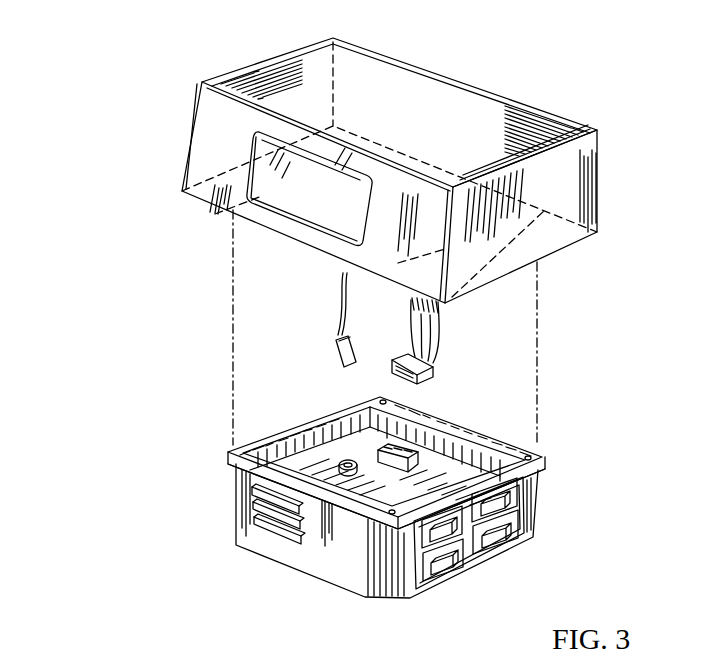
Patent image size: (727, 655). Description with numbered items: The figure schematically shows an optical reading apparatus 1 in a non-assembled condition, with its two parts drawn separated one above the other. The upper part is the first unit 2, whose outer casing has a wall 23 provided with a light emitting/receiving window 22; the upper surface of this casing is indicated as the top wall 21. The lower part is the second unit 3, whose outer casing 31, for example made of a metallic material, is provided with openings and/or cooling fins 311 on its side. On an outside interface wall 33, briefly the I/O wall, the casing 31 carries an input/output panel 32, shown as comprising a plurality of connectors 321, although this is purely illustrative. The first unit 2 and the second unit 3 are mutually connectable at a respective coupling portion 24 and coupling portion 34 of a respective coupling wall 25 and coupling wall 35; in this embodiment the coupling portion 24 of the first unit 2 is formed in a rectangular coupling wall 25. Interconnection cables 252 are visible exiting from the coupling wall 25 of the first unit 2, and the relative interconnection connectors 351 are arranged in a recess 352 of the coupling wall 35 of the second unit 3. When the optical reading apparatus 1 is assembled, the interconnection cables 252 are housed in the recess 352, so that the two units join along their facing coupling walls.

The optical reading apparatus 1 is at (196, 330).
The first unit 2 is at (548, 93).
The top wall of cover 21 is at (450, 117).
The light emitting/receiving window 22 is at (278, 163).
The wall 23 is at (208, 143).
The coupling portion 24 is at (296, 233).
The coupling wall 25 is at (556, 253).
The interconnection cables 252 is at (440, 330).
The second unit 3 is at (583, 506).
The outer casing 31 is at (350, 579).
The openings and/or cooling fins 311 is at (268, 520).
The input/output panel 32 is at (437, 578).
The connectors 321 is at (522, 528).
The outside interface wall 33 is at (420, 592).
The coupling portion 34 is at (230, 462).
The coupling wall 35 is at (230, 462).
The interconnection connectors 351 is at (386, 451).
The recess 352 is at (432, 462).